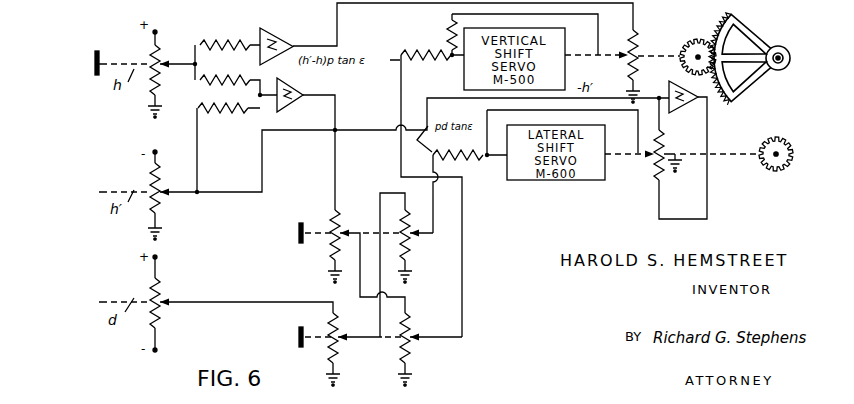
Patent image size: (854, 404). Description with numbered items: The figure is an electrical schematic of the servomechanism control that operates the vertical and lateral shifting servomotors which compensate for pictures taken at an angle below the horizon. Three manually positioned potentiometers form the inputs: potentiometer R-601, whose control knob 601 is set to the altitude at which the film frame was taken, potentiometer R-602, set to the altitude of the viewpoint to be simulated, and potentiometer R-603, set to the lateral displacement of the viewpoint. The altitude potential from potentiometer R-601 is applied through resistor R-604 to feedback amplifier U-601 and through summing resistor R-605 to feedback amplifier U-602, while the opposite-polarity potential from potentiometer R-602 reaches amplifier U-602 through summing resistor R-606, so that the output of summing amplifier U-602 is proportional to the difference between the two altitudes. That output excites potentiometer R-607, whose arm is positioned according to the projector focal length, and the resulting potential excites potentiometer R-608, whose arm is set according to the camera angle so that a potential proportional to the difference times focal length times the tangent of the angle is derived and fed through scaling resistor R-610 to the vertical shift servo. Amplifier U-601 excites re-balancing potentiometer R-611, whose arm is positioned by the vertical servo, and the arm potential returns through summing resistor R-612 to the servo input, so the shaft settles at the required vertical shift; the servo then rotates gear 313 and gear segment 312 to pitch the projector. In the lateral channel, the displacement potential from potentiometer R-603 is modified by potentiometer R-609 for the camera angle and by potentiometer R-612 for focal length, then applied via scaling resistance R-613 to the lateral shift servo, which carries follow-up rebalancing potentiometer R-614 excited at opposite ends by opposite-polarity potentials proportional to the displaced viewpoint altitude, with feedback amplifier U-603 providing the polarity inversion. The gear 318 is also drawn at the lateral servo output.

The control knob 601 is at (94, 63).
The potentiometer R-601 is at (153, 62).
The potentiometer R-602 is at (162, 205).
The potentiometer R-603 is at (162, 310).
The resistor R-604 is at (247, 46).
The summing resistor R-605 is at (247, 81).
The summing resistor R-606 is at (199, 112).
The potentiometer R-607 is at (330, 227).
The potentiometer R-608 is at (407, 330).
The potentiometer R-609 is at (330, 327).
The scaling resistor R-610 is at (424, 48).
The re-balancing potentiometer R-611 is at (636, 56).
The summing resistor R-612 is at (447, 30).
The scaling resistance R-613 is at (477, 152).
The rebalancing potentiometer R-614 is at (653, 162).
The feedback amplifier U-601 is at (284, 34).
The summing amplifier U-602 is at (294, 77).
The feedback amplifier U-603 is at (676, 100).
The gear segment 312 is at (757, 85).
The gear 313 is at (704, 38).
The gear driven by lateral shift servo 318 is at (790, 170).